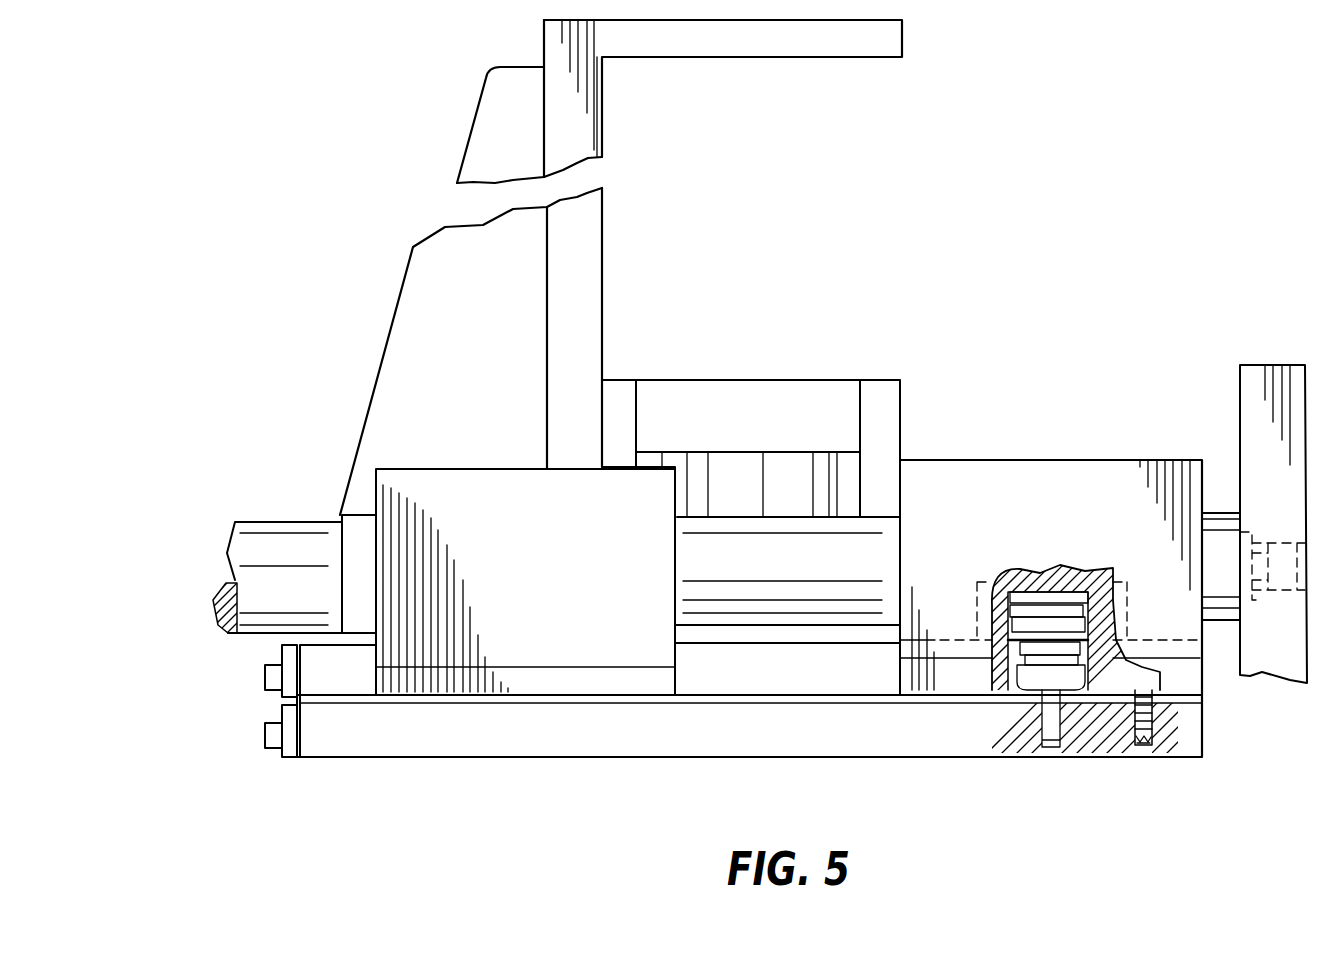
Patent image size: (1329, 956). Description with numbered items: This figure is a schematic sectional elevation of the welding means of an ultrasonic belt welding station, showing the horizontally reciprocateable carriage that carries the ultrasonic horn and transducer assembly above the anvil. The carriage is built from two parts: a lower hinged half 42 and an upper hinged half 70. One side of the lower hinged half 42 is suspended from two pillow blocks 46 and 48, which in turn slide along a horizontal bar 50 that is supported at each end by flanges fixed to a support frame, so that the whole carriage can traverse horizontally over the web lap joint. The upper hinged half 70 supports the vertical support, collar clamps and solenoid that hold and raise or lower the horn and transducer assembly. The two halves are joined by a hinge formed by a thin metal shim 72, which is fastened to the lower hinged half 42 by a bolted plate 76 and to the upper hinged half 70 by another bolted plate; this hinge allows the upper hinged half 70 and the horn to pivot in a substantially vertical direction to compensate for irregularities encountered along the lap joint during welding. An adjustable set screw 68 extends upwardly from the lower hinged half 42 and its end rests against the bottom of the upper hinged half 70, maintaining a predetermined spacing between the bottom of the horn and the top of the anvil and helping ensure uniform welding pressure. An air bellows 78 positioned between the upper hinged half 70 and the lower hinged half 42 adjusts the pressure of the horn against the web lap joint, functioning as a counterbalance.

The lower hinged half 42 is at (665, 738).
The pillow block 46 is at (455, 475).
The pillow block 48 is at (1035, 462).
The horizontal bar 50 is at (268, 523).
The adjustable set screw 68 is at (1150, 753).
The upper hinged half 70 is at (310, 643).
The thin metal shim 72 is at (297, 727).
The bolted plate 76 is at (277, 749).
The air bellows 78 is at (1065, 595).